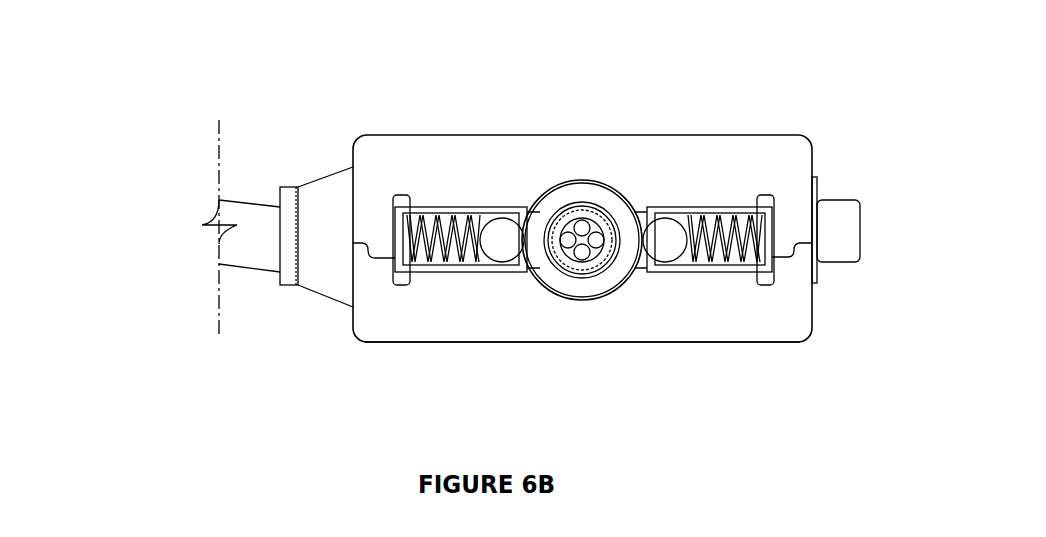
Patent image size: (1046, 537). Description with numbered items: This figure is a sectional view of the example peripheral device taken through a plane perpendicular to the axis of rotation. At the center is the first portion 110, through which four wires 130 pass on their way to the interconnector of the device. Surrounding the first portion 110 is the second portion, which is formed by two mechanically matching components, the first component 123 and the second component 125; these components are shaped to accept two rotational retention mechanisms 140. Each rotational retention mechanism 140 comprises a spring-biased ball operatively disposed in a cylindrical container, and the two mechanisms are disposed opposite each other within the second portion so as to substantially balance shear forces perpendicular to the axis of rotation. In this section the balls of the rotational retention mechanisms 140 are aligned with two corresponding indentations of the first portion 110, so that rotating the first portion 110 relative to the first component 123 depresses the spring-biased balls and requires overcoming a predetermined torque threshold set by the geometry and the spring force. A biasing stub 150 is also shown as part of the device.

The first portion 110 is at (322, 168).
The first component 123 is at (405, 148).
The second component 125 is at (403, 338).
The wires 130 is at (570, 257).
The rotational retention mechanism 140 is at (690, 205).
The biasing stub 150 is at (833, 203).